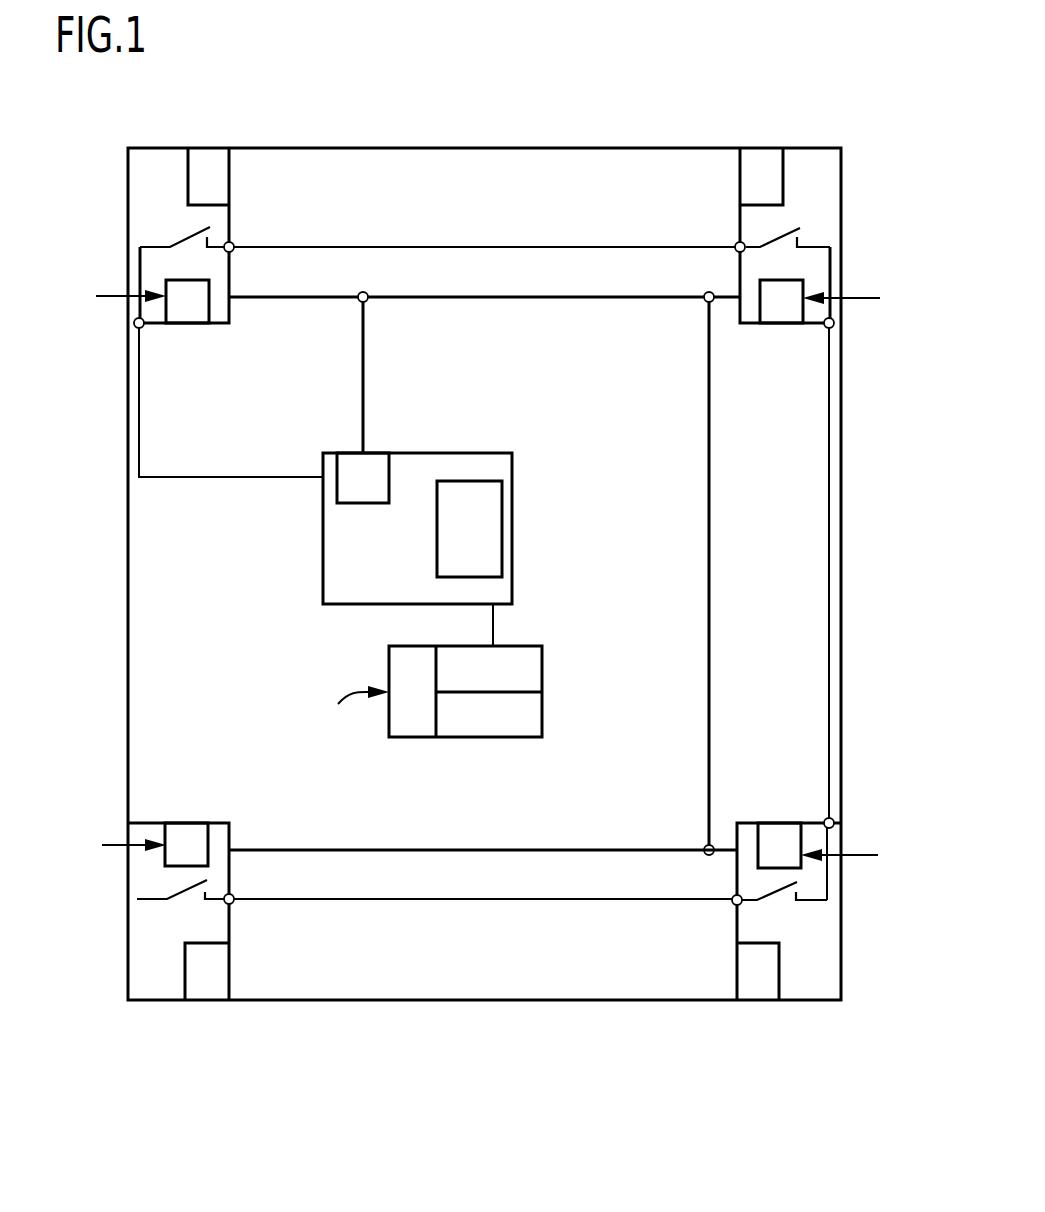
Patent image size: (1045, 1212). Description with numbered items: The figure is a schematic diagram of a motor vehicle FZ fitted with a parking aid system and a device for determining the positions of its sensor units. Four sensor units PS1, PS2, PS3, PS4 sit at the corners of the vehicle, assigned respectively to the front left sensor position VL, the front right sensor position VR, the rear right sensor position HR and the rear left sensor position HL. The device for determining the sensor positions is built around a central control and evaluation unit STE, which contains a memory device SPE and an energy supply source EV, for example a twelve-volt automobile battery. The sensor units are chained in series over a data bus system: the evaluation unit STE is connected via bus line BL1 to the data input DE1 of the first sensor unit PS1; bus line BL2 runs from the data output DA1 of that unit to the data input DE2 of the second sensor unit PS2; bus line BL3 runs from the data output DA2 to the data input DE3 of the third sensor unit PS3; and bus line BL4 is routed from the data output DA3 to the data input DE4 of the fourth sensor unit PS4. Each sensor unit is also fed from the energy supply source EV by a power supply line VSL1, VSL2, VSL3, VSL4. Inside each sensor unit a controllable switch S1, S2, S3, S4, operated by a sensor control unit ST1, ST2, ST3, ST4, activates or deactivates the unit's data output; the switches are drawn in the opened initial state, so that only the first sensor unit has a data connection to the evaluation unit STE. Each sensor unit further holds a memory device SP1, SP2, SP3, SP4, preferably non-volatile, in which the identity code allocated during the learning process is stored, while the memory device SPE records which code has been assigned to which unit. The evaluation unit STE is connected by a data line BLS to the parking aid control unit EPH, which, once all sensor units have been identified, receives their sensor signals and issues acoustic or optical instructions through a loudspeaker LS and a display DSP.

The vehicle FZ is at (478, 147).
The sensor control unit ST1 is at (208, 157).
The sensor control unit ST2 is at (760, 157).
The sensor control unit ST3 is at (755, 990).
The sensor control unit ST4 is at (205, 990).
The sensor unit PS1 is at (136, 162).
The sensor unit PS2 is at (832, 175).
The sensor unit PS3 is at (825, 975).
The sensor unit PS4 is at (137, 950).
The controllable switch S1 is at (200, 230).
The switch S2 is at (780, 240).
The switch S3 is at (778, 900).
The switch S4 is at (200, 885).
The data output DA1 is at (235, 243).
The data output DA2 is at (826, 330).
The data output DA3 is at (733, 905).
The data input DE1 is at (145, 330).
The data input DE2 is at (735, 243).
The data input DE3 is at (825, 818).
The data input DE4 is at (235, 905).
The memory device SP1 is at (195, 314).
The memory device SP2 is at (778, 314).
The memory device SP3 is at (777, 830).
The memory device SP4 is at (181, 834).
The front left sensor position VL is at (116, 294).
The front right sensor position VR is at (860, 299).
The rear left sensor position HL is at (118, 842).
The rear right sensor position HR is at (854, 849).
The bus line BL1 is at (141, 432).
The bus line BL2 is at (533, 246).
The bus line BL3 is at (828, 487).
The bus line BL4 is at (455, 901).
The power supply line VSL1 is at (365, 370).
The power supply line VSL2 is at (567, 299).
The power supply line VSL3 is at (708, 523).
The power supply line VSL4 is at (440, 849).
The central control and evaluation unit STE is at (417, 528).
The energy supply source EV is at (363, 478).
The memory device SPE is at (469, 529).
The bus line to display BLS is at (494, 622).
The control unit EPH is at (414, 691).
The display DSP is at (489, 672).
The loudspeaker LS is at (474, 715).